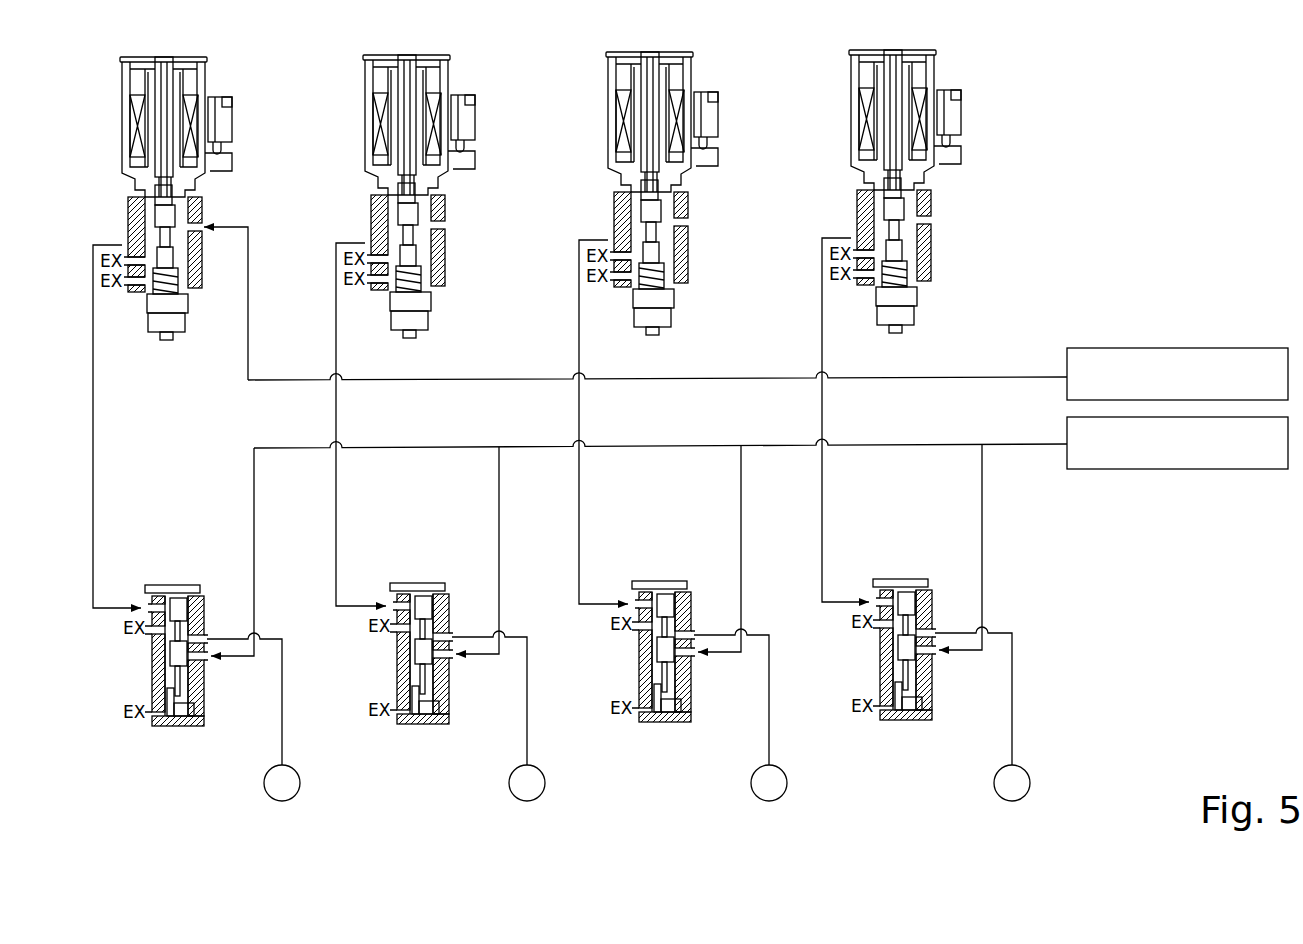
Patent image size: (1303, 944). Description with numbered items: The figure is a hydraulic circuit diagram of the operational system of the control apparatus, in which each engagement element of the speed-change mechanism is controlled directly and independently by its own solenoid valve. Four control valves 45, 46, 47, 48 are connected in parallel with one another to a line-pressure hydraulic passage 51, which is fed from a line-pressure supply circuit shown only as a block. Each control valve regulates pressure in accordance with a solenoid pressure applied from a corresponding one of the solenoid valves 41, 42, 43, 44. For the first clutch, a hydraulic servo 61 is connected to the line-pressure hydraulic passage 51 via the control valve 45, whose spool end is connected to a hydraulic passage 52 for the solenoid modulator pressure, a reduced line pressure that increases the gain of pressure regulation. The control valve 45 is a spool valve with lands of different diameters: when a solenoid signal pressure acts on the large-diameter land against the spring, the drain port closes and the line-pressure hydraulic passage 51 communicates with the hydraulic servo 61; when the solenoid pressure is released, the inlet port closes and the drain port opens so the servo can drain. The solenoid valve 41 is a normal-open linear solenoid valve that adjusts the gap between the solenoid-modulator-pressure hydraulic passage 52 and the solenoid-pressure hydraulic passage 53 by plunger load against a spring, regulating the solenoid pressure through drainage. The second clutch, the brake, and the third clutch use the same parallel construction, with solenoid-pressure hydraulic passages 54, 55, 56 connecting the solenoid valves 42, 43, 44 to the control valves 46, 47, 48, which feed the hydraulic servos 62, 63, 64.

The solenoid valve 41 is at (219, 78).
The solenoid valve 42 is at (466, 74).
The solenoid valve 43 is at (708, 72).
The solenoid valve 44 is at (957, 71).
The C-1 control valve 45 is at (184, 737).
The control valve 46 is at (429, 735).
The control valve 47 is at (671, 733).
The control valve 48 is at (912, 731).
The line-pressure hydraulic passage 51 is at (1033, 446).
The solenoid-modulator-pressure hydraulic passage 52 is at (978, 376).
The solenoid-pressure hydraulic passage 53 is at (93, 379).
The solenoid-pressure hydraulic passage 54 is at (336, 335).
The solenoid-pressure hydraulic passage 55 is at (579, 335).
The solenoid-pressure hydraulic passage 56 is at (822, 335).
The hydraulic servo 61 is at (300, 785).
The hydraulic servo 62 is at (545, 785).
The hydraulic servo 63 is at (787, 785).
The hydraulic servo 64 is at (1030, 785).